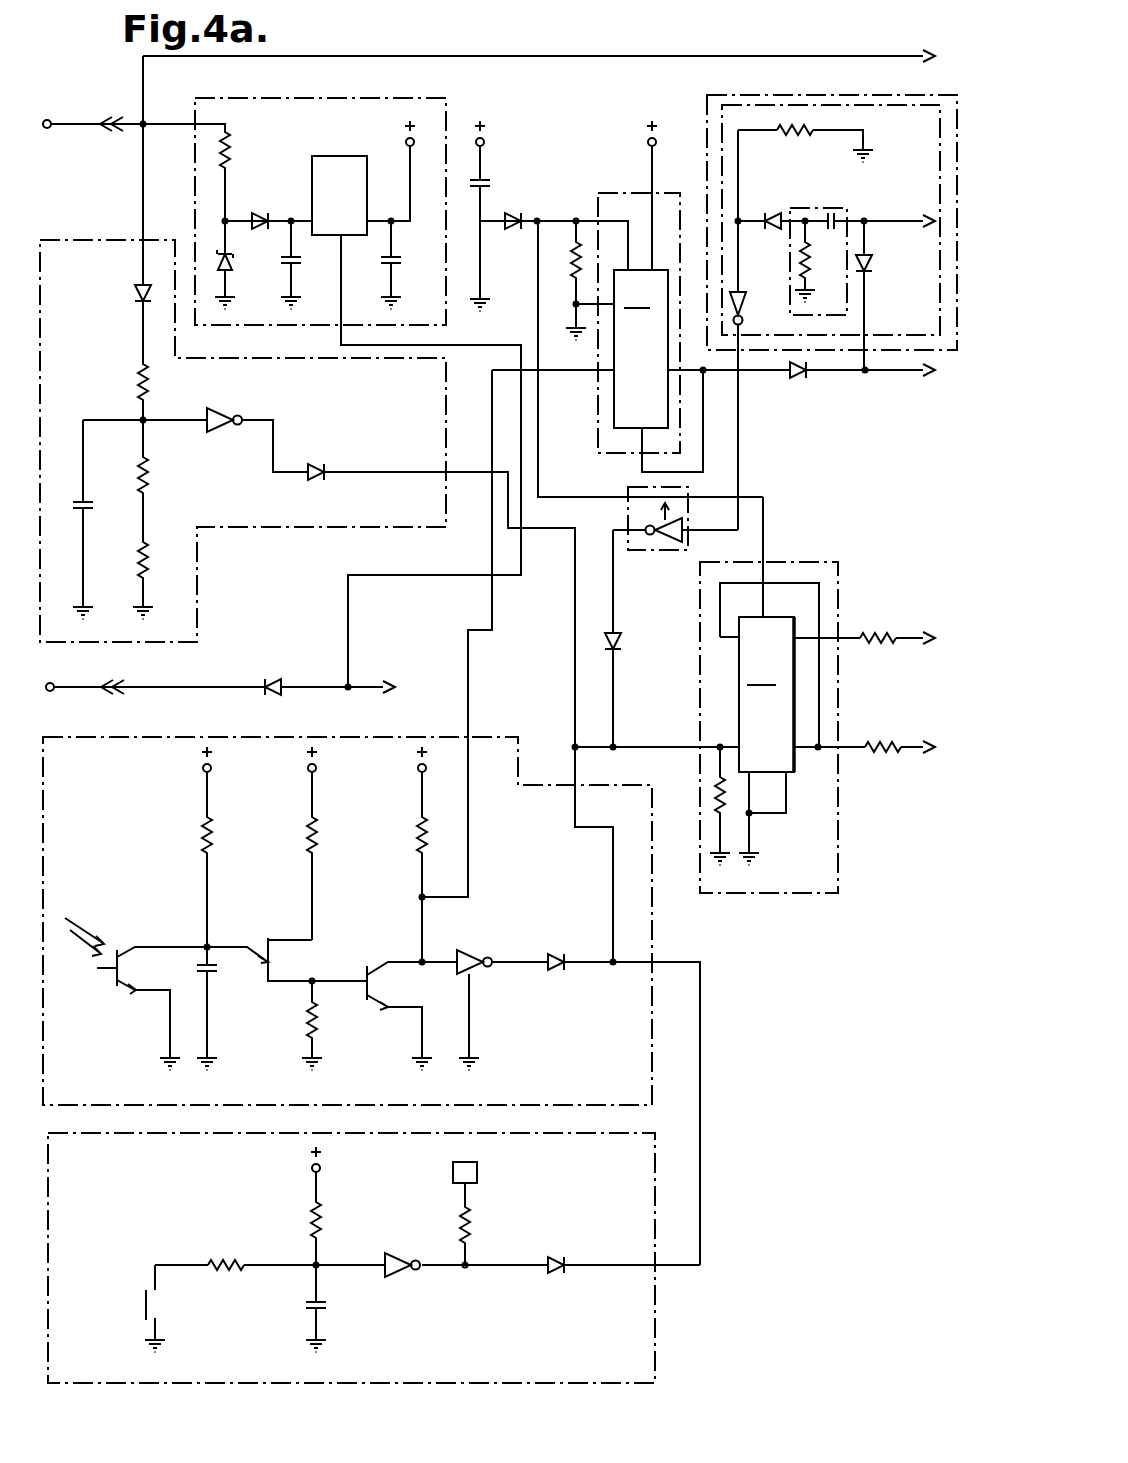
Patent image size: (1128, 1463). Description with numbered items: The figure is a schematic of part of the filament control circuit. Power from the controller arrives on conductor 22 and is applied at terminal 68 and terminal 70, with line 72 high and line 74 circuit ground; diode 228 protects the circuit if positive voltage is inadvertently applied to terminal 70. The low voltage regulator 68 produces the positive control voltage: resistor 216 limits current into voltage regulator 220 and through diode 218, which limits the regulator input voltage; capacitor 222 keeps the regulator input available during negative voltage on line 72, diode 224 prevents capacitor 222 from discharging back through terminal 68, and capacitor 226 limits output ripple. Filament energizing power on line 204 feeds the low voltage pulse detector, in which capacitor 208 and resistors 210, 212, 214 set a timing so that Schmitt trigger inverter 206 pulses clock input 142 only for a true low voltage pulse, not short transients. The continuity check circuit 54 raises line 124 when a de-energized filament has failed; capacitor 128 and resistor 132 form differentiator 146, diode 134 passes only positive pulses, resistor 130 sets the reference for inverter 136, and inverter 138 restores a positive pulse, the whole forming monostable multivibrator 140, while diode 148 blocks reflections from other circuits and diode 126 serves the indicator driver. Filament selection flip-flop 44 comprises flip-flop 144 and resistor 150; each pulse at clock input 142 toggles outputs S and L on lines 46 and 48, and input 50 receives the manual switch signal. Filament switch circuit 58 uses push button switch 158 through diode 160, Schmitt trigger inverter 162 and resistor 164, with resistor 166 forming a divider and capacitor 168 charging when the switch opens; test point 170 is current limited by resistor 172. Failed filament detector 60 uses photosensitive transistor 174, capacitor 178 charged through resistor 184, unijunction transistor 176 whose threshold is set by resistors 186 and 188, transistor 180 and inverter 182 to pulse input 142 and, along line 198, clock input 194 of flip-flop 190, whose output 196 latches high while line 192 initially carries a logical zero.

The electrical conductor 22 is at (458, 56).
The line 72 is at (125, 120).
The terminal 70 is at (50, 692).
The line 204 is at (143, 172).
The low voltage regulator 68 is at (446, 104).
The resistor 216 is at (235, 152).
The diode 224 is at (270, 195).
The voltage regulator 220 is at (328, 156).
The diode 218 is at (266, 279).
The capacitor 222 is at (322, 272).
The capacitor 226 is at (433, 252).
The flip-flop 190 is at (652, 296).
The clock input 194 is at (655, 344).
The output 196 is at (667, 372).
The line 192 is at (770, 373).
The line 198 is at (492, 608).
The line 74 is at (148, 687).
The diode 228 is at (289, 650).
The resistor 210 is at (137, 376).
The inverter 206 is at (228, 412).
The resistor 212 is at (153, 478).
The resistor 214 is at (152, 548).
The capacitor 208 is at (93, 503).
The continuity check circuit 54 is at (707, 105).
The line 124 is at (898, 220).
The resistor 130 is at (796, 141).
The diode 134 is at (785, 187).
The capacitor 128 is at (840, 187).
The resistor 132 is at (800, 247).
The inverter 136 is at (775, 279).
The diode 126 is at (878, 262).
The differentiator 146 is at (845, 302).
The monostable multivibrator 140 is at (940, 292).
The inverter 138 is at (662, 545).
The diode 148 is at (620, 644).
The filament selection flip-flop 44 is at (818, 562).
The flip-flop 144 is at (766, 634).
The clock input 142 is at (782, 720).
The line 46 is at (850, 636).
The line 48 is at (860, 746).
The input 50 is at (700, 747).
The resistor 150 is at (732, 805).
The failed filament detector 60 is at (235, 737).
The resistor 184 is at (205, 830).
The resistor 186 is at (310, 830).
The photosensitive transistor 174 is at (117, 987).
The capacitor 178 is at (214, 970).
The unijunction transistor 176 is at (267, 937).
The resistor 188 is at (320, 1020).
The transistor 180 is at (367, 972).
The inverter 182 is at (470, 956).
The filament switch circuit 58 is at (655, 1318).
The push button switch 158 is at (146, 1303).
The resistor 164 is at (218, 1272).
The resistor 166 is at (312, 1224).
The capacitor 168 is at (325, 1305).
The Schmitt trigger inverter 162 is at (398, 1275).
The diode 160 is at (553, 1275).
The test point 170 is at (477, 1173).
The resistor 172 is at (472, 1232).